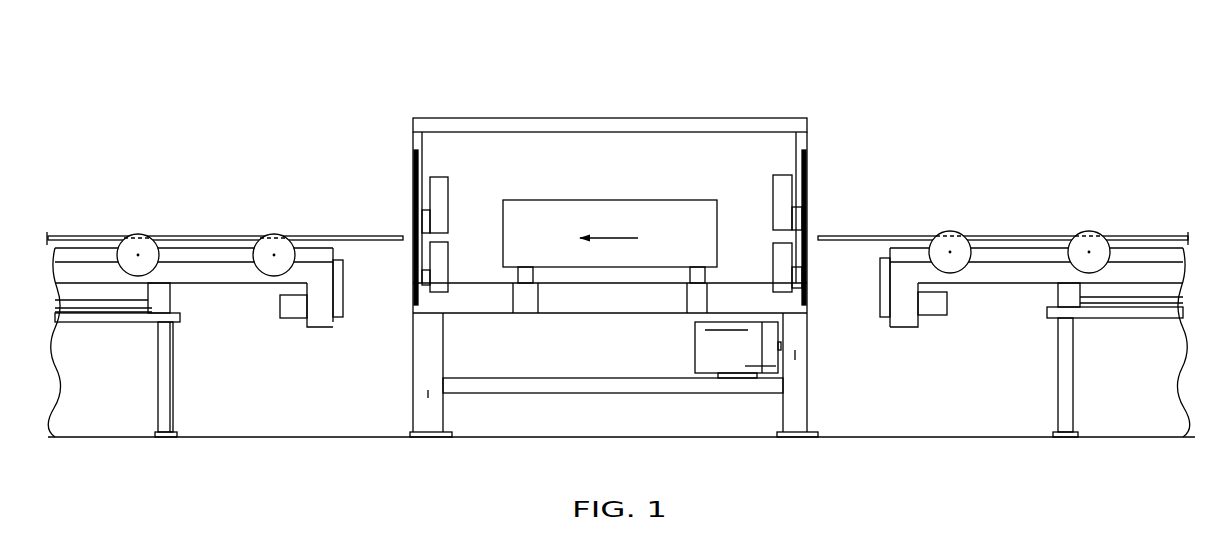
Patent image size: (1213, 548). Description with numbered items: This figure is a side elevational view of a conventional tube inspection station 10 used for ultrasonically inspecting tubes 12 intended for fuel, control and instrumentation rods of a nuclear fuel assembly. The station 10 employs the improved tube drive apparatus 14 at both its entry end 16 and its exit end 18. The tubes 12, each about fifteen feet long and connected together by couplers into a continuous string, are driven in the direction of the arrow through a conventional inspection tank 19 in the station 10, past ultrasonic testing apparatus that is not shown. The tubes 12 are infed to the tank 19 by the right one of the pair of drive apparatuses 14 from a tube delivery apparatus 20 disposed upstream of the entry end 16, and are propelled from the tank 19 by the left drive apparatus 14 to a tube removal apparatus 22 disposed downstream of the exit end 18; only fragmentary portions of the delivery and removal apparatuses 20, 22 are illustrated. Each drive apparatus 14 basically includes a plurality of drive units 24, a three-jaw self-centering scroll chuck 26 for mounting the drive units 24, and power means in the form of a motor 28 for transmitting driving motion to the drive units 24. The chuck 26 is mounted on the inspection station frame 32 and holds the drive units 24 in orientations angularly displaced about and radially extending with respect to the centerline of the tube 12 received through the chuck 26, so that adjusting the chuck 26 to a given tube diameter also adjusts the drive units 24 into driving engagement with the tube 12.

The tube inspection station 10 is at (807, 93).
The tubes 12 is at (368, 234).
The tube drive apparatus 14 is at (483, 200).
The entry end 16 is at (807, 232).
The exit end 18 is at (413, 222).
The inspection tank 19 is at (609, 200).
The tube delivery apparatus 20 is at (995, 320).
The tube removal apparatus 22 is at (240, 318).
The drive units 24 is at (450, 253).
The three-jaw self-centering scroll chuck 26 is at (425, 257).
The motor 28 is at (695, 347).
The inspection station frame 32 is at (808, 378).